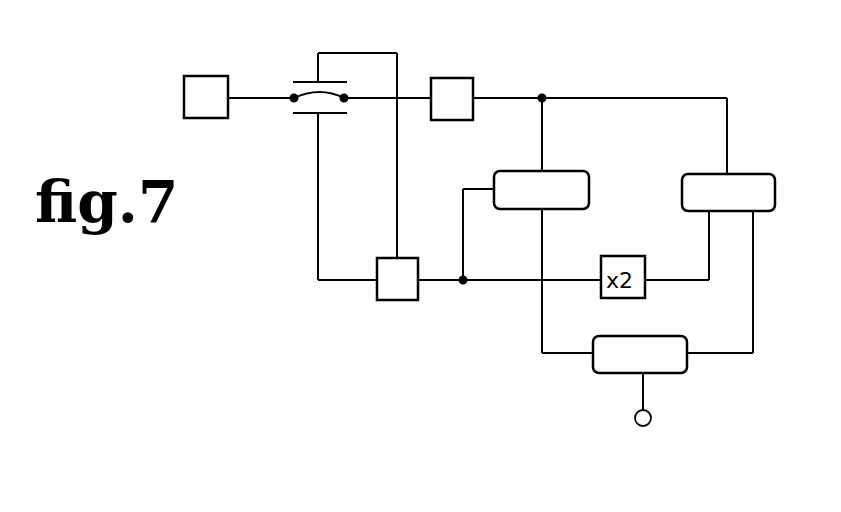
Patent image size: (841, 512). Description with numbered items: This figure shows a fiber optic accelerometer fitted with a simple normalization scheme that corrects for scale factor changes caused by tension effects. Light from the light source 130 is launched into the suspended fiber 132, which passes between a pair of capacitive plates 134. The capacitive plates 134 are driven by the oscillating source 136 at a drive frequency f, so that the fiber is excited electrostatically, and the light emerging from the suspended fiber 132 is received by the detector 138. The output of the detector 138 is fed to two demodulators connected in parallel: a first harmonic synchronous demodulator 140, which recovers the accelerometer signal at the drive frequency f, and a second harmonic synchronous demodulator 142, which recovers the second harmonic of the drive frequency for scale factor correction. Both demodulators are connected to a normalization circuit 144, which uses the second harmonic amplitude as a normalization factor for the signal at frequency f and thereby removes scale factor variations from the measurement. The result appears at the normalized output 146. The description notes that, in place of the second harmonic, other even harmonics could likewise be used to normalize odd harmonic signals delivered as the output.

The light source 130 is at (204, 79).
The suspended fiber 132 is at (306, 78).
The capacitive plates 134 is at (306, 117).
The oscillating source 136 is at (395, 302).
The detector 138 is at (459, 84).
The first harmonic synchronous demodulator 140 is at (553, 172).
The second harmonic synchronous demodulator 142 is at (706, 175).
The normalization circuit 144 is at (624, 368).
The normalized output 146 is at (651, 423).